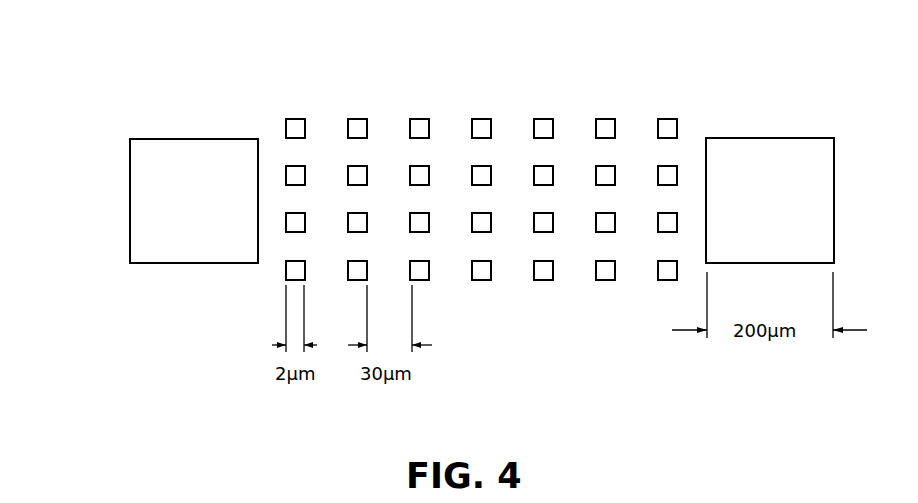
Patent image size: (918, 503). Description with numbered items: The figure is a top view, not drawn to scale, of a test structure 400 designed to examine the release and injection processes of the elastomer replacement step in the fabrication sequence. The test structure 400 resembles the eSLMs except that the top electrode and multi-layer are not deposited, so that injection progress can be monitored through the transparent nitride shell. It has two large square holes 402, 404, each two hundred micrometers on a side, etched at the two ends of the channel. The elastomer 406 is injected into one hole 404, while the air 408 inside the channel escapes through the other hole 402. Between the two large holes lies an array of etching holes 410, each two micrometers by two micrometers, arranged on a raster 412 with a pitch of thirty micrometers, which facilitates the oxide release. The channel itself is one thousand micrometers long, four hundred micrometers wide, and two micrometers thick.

The test structure 400 is at (700, 425).
The large square hole 402 is at (179, 252).
The large square hole 404 is at (813, 230).
The elastomer 406 is at (770, 160).
The air 408 is at (152, 205).
The etching holes 410 is at (663, 127).
The raster 412 is at (384, 112).